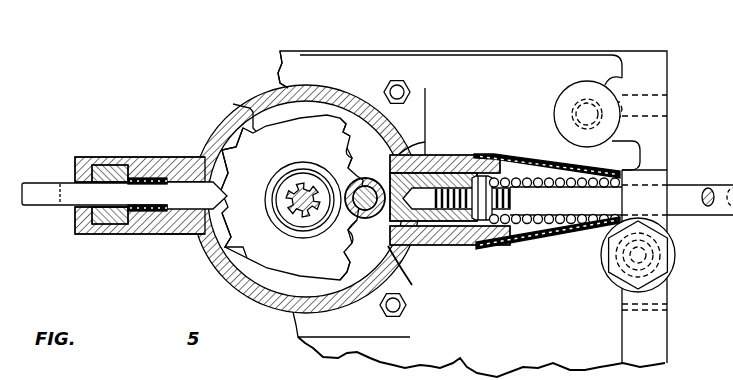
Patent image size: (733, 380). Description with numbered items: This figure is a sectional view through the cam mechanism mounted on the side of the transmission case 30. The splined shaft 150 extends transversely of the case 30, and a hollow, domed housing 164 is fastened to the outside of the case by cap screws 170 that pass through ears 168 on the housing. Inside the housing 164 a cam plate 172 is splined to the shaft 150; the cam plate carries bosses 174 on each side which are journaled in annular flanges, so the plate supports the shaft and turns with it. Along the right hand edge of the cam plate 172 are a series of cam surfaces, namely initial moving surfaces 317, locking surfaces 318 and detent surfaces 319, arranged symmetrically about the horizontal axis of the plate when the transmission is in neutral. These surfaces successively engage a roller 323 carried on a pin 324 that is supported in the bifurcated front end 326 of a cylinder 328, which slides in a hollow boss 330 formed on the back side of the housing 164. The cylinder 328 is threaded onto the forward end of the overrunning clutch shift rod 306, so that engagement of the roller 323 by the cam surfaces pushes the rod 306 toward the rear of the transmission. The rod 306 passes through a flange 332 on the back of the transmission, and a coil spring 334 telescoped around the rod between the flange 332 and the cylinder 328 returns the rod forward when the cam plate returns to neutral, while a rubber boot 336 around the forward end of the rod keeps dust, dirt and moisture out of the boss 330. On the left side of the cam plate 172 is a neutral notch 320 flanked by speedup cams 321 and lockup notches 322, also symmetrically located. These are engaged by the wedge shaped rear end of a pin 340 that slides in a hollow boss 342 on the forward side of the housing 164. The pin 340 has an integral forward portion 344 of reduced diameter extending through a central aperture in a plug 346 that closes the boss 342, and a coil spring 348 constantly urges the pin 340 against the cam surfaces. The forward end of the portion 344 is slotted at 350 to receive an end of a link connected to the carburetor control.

The case 30 is at (521, 62).
The splined shaft 150 is at (298, 212).
The hollow domed housing 164 is at (303, 85).
The ears 168 is at (410, 85).
The cap screws 170 is at (410, 95).
The cam plate 172 is at (233, 117).
The bosses 174 is at (321, 148).
The overrunning clutch shift rod 306 is at (677, 196).
The initial moving surfaces 317 is at (362, 179).
The locking surfaces 318 is at (349, 150).
The detent surfaces 319 is at (343, 130).
The neutral notch 320 is at (224, 190).
The speedup cams 321 is at (230, 157).
The lockup notches 322 is at (242, 294).
The roller 323 is at (393, 133).
The pin 324 is at (426, 154).
The bifurcated front end 326 is at (389, 262).
The cylinder 328 is at (430, 247).
The hollow boss 330 is at (485, 240).
The flange 332 is at (655, 331).
The coil spring 334 is at (545, 240).
The rubber boot 336 is at (540, 143).
The pin 340 is at (166, 235).
The hollow boss 342 is at (152, 162).
The forward portion 344 is at (31, 168).
The plug 346 is at (86, 232).
The coil spring 348 is at (133, 177).
The slot 350 is at (54, 207).